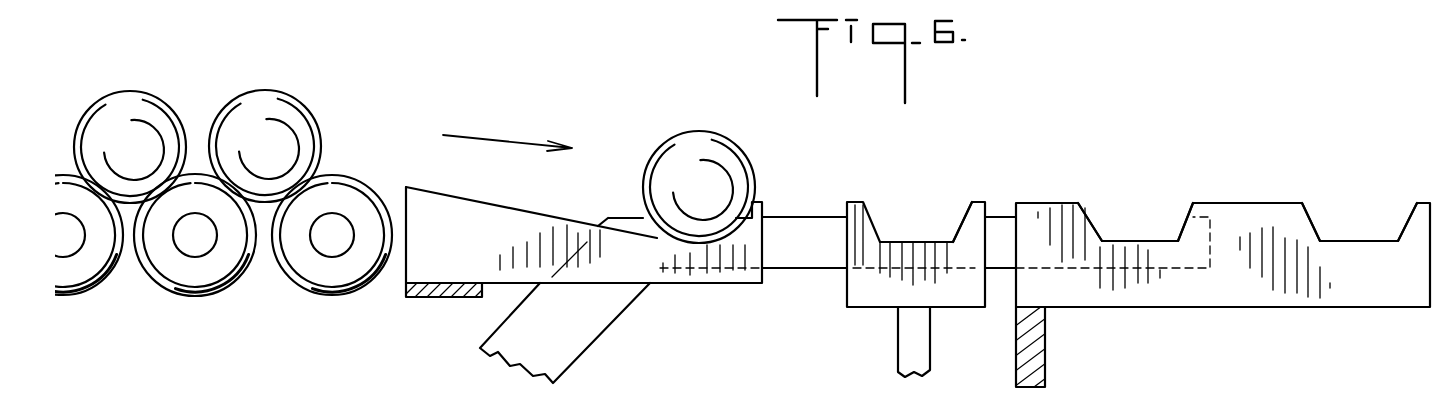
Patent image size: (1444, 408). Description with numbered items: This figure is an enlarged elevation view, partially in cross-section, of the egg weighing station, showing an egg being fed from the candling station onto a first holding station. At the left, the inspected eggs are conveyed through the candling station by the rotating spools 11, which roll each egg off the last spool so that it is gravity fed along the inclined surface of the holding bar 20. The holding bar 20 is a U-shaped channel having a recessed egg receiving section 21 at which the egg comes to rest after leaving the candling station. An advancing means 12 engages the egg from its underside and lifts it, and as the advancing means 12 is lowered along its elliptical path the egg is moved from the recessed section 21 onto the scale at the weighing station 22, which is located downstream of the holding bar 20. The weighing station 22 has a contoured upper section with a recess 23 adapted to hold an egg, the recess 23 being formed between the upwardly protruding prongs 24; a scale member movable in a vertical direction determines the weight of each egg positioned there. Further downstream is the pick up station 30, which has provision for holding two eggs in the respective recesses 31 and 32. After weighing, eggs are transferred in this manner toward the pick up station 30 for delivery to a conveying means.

The rotating spools 11 is at (335, 280).
The advancing means 12 is at (293, 110).
The holding bar 20 is at (682, 248).
The recessed egg receiving section 21 is at (657, 235).
The weighing station 22 is at (925, 302).
The recess 23 is at (905, 240).
The upwardly protruding prongs 24 is at (973, 203).
The pick up station 30 is at (1248, 296).
The recess 31 is at (1128, 238).
The recess 32 is at (1368, 242).